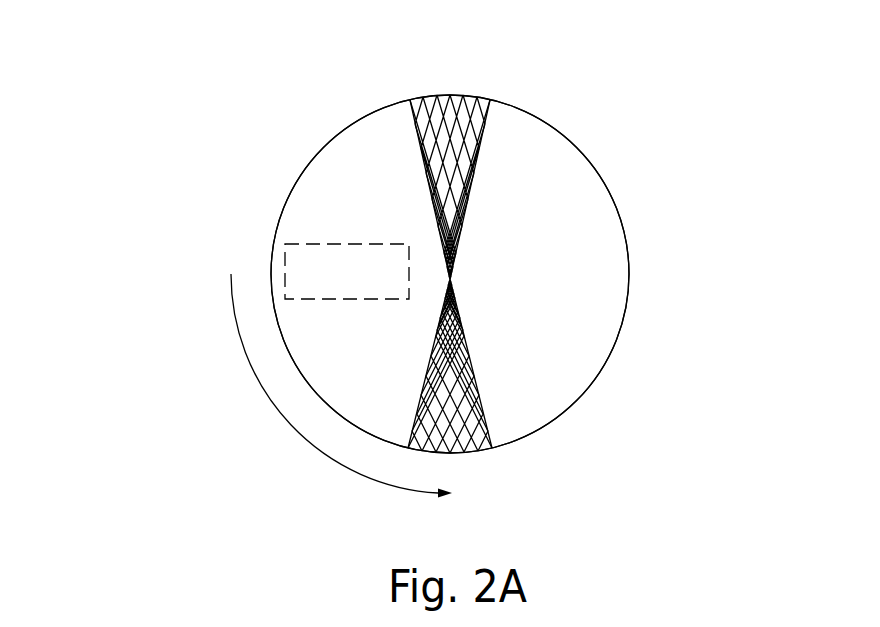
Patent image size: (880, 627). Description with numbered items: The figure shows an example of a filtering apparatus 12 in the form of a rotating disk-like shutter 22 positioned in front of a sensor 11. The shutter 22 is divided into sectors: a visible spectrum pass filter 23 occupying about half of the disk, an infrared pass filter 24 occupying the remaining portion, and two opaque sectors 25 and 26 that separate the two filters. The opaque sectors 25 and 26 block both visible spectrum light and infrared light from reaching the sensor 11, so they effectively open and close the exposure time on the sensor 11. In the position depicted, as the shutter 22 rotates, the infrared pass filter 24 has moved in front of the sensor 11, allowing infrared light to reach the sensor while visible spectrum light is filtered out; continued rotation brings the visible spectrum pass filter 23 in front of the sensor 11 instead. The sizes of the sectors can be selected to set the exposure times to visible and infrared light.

The sensor 11 is at (358, 270).
The filtering apparatus 12 is at (166, 418).
The shutter 22 is at (625, 385).
The visible spectrum pass filter 23 is at (546, 172).
The infrared pass filter 24 is at (327, 172).
The opaque sector 25 is at (454, 84).
The opaque sector 26 is at (484, 460).